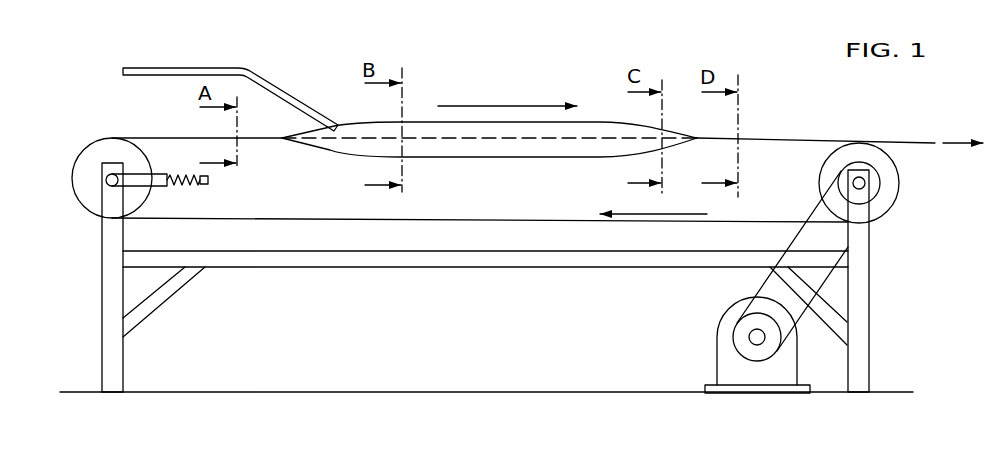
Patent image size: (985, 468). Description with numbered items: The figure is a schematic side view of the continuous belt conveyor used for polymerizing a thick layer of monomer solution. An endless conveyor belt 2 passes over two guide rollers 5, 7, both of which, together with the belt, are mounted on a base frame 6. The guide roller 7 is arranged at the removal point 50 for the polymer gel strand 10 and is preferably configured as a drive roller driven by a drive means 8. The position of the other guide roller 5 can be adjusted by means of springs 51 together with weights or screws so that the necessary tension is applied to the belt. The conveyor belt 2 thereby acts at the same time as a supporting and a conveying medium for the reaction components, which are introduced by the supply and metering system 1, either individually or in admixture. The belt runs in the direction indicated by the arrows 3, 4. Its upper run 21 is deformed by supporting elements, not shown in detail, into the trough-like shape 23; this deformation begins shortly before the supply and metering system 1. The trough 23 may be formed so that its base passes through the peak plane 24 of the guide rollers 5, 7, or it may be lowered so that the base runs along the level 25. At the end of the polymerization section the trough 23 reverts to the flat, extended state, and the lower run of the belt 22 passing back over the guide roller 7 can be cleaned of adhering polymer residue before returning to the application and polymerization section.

The supply and metering system 1 is at (271, 82).
The endless conveyor belt 2 is at (185, 137).
The arrow indicating belt running direction 3 is at (492, 105).
The arrow indicating belt running direction 4 is at (645, 215).
The guide roller 5 is at (88, 160).
The base frame 6 is at (108, 266).
The guide roller 7 is at (885, 163).
The drive means 8 is at (740, 356).
The polymer gel strand 10 is at (947, 141).
The upper run of the belt 21 is at (770, 137).
The lower run of the belt 22 is at (485, 222).
The trough-like shape 23 is at (446, 130).
The peak plane of the guide rollers 24 is at (535, 138).
The level of the trough base 25 is at (580, 157).
The removal point 50 is at (858, 143).
The springs 51 is at (173, 172).